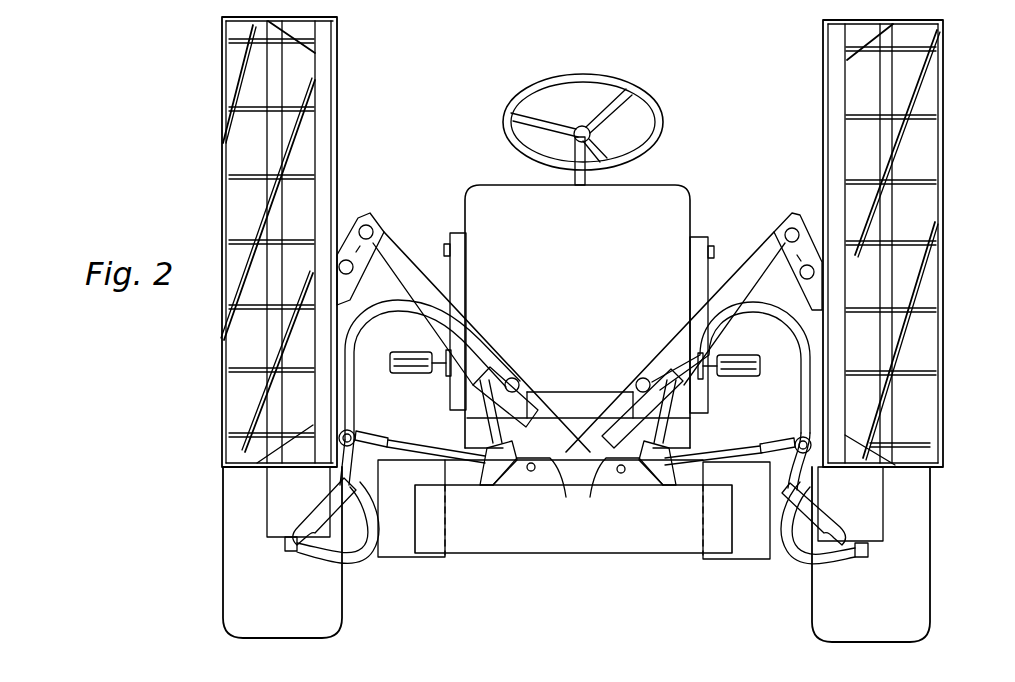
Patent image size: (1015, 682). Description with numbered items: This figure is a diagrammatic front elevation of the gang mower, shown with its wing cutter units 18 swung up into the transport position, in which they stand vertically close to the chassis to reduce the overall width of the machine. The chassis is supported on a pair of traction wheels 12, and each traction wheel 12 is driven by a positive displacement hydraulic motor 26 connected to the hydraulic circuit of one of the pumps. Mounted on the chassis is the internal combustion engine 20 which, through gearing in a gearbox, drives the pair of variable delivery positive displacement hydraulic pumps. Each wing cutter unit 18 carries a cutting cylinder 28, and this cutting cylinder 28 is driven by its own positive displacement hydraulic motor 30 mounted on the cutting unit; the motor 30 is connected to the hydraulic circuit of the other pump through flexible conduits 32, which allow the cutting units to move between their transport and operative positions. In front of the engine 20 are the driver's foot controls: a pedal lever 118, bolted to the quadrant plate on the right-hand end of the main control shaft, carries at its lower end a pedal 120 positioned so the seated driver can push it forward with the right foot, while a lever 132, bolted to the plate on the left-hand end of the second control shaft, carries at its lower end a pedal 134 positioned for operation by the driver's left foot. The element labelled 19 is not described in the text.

The traction wheel 12 is at (327, 607).
The wing cutter unit 18 is at (234, 153).
The cross bar 19 is at (573, 505).
The internal combustion engine 20 is at (592, 304).
The hydraulic motor 26 is at (410, 546).
The cutting cylinder 28 is at (240, 77).
The hydraulic motor 30 is at (277, 497).
The flexible conduit 32 is at (331, 487).
The pedal lever 118 is at (440, 263).
The lever 132 is at (710, 266).
The pedal 120 is at (418, 369).
The pedal 134 is at (748, 377).